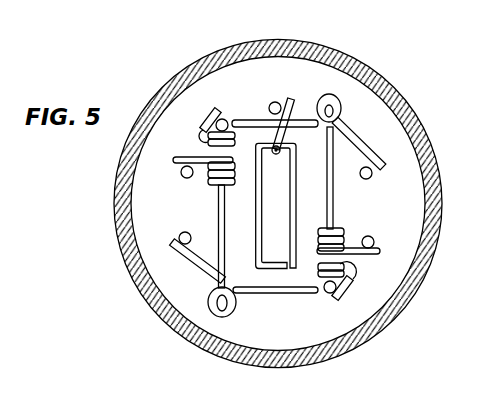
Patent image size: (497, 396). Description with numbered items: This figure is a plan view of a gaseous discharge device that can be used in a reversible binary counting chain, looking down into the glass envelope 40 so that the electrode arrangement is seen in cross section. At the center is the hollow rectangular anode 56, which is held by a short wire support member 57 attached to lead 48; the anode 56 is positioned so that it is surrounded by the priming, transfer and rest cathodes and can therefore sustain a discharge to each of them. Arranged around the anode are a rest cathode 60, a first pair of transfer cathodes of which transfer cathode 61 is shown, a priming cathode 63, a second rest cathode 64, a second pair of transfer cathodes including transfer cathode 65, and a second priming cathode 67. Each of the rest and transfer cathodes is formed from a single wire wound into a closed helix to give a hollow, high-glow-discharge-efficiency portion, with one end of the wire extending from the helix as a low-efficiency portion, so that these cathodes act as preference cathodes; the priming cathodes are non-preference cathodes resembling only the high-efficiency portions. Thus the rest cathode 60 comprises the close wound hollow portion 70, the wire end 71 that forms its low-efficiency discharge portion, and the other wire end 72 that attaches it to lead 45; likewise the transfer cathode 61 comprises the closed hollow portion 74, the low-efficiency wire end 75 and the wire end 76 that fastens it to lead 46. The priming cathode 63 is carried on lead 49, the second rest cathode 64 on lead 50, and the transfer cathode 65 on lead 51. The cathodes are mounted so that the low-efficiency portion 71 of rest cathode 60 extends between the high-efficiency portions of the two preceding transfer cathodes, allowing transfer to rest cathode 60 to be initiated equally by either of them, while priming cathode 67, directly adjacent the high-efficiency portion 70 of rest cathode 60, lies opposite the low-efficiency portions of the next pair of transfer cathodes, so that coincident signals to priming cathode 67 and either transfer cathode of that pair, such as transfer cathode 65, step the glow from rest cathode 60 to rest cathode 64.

The envelope 40 is at (339, 53).
The lead 45 is at (375, 243).
The lead 46 is at (370, 179).
The lead 48 is at (279, 103).
The lead 49 is at (227, 120).
The lead 50 is at (182, 177).
The lead 51 is at (190, 235).
The hollow rectangular anode 56 is at (273, 270).
The wire support member 57 is at (294, 97).
The rest cathode 60 is at (364, 201).
The transfer cathode 61 is at (363, 132).
The priming cathode 63 is at (205, 134).
The second rest cathode 64 is at (218, 195).
The transfer cathode 65 is at (229, 316).
The second priming cathode 67 is at (354, 281).
The close wound hollow portion 70 is at (344, 235).
The wire end 71 is at (335, 201).
The wire end 72 is at (365, 255).
The closed hollow portion 74 is at (341, 103).
The wire end 75 is at (258, 120).
The wire end 76 is at (379, 155).